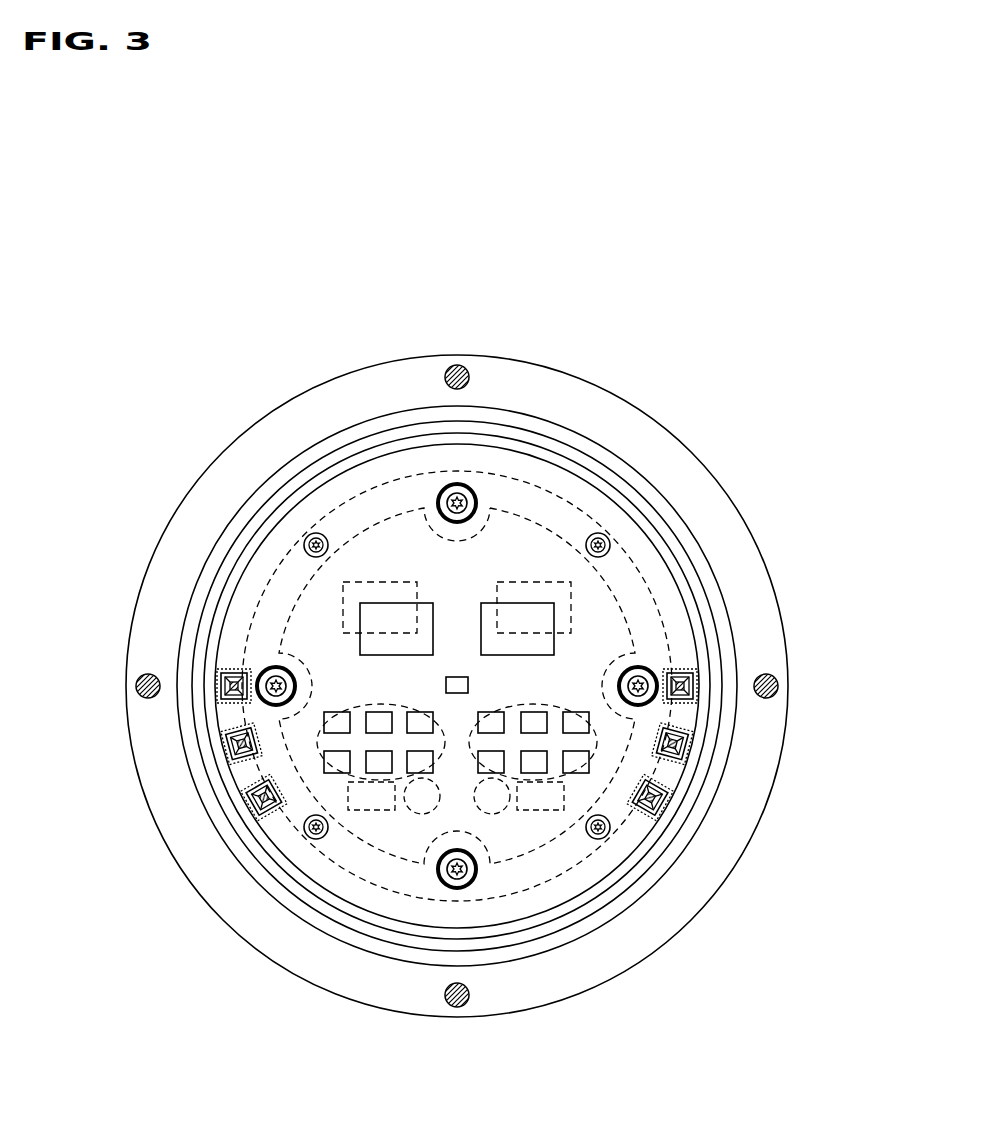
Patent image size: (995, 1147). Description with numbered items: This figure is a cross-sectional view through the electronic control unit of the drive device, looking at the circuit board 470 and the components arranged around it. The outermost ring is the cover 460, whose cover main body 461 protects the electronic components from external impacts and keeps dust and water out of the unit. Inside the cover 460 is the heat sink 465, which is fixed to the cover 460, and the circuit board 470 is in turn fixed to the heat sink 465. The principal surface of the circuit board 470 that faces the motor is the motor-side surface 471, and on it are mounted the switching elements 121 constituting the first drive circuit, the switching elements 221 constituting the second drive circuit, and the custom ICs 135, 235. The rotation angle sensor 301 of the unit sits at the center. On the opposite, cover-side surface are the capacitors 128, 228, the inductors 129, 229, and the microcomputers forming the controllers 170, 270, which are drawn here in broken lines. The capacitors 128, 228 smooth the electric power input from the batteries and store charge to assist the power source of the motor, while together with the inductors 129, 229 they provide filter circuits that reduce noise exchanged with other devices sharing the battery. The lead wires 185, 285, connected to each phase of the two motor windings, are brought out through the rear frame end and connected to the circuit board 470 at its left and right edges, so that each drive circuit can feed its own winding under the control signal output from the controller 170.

The switching elements 121 is at (325, 773).
The capacitors 128 is at (325, 748).
The inductors 129 is at (370, 812).
The custom IC 135 is at (360, 640).
The controller 170 is at (343, 595).
The lead wires 185 is at (215, 675).
The switching elements 221 is at (590, 778).
The capacitors 228 is at (589, 745).
The inductors 229 is at (545, 812).
The custom IC 235 is at (554, 640).
The controller 270 is at (571, 593).
The lead wires 285 is at (700, 680).
The rotation angle sensor 301 is at (452, 676).
The cover 460 is at (298, 397).
The cover main body 461 is at (240, 445).
The heat sink 465 is at (593, 510).
The circuit board 470 is at (552, 462).
The motor-side surface 471 is at (625, 532).